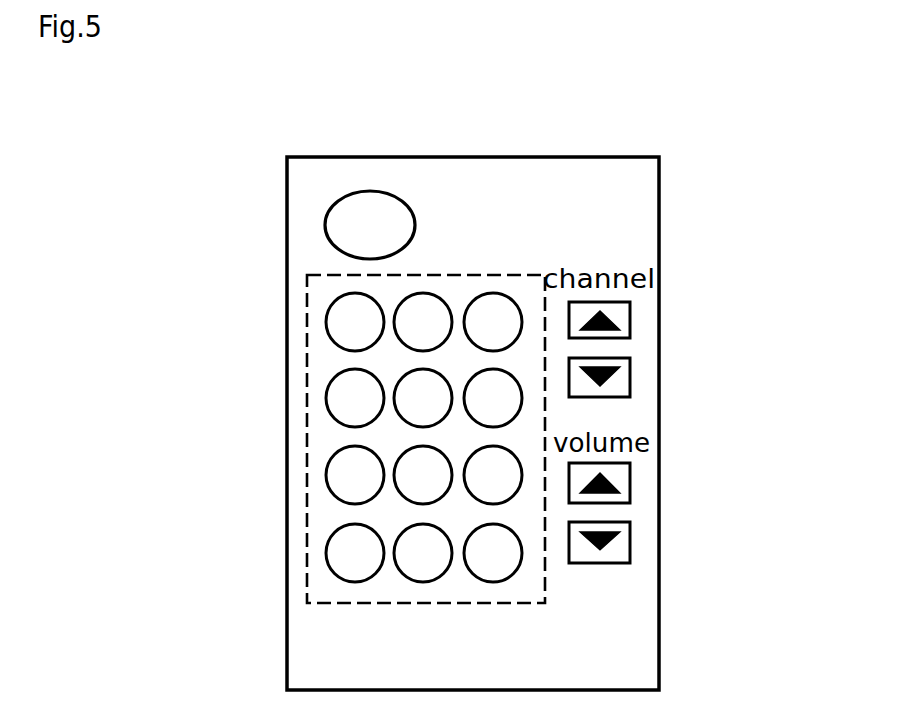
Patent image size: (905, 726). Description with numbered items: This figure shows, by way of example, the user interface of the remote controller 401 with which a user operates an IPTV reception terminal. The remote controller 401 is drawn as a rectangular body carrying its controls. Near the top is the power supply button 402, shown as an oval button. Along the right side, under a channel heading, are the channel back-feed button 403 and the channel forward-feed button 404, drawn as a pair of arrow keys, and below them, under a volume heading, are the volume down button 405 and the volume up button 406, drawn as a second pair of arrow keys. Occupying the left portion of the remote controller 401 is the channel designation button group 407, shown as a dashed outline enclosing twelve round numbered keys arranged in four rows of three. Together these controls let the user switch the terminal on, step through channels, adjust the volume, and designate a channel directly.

The remote controller 401 is at (514, 166).
The power supply button 402 is at (325, 228).
The channel back-feed button 403 is at (620, 311).
The channel forward-feed button 404 is at (612, 382).
The volume down button 405 is at (622, 475).
The volume up button 406 is at (618, 545).
The channel designation button group 407 is at (317, 350).